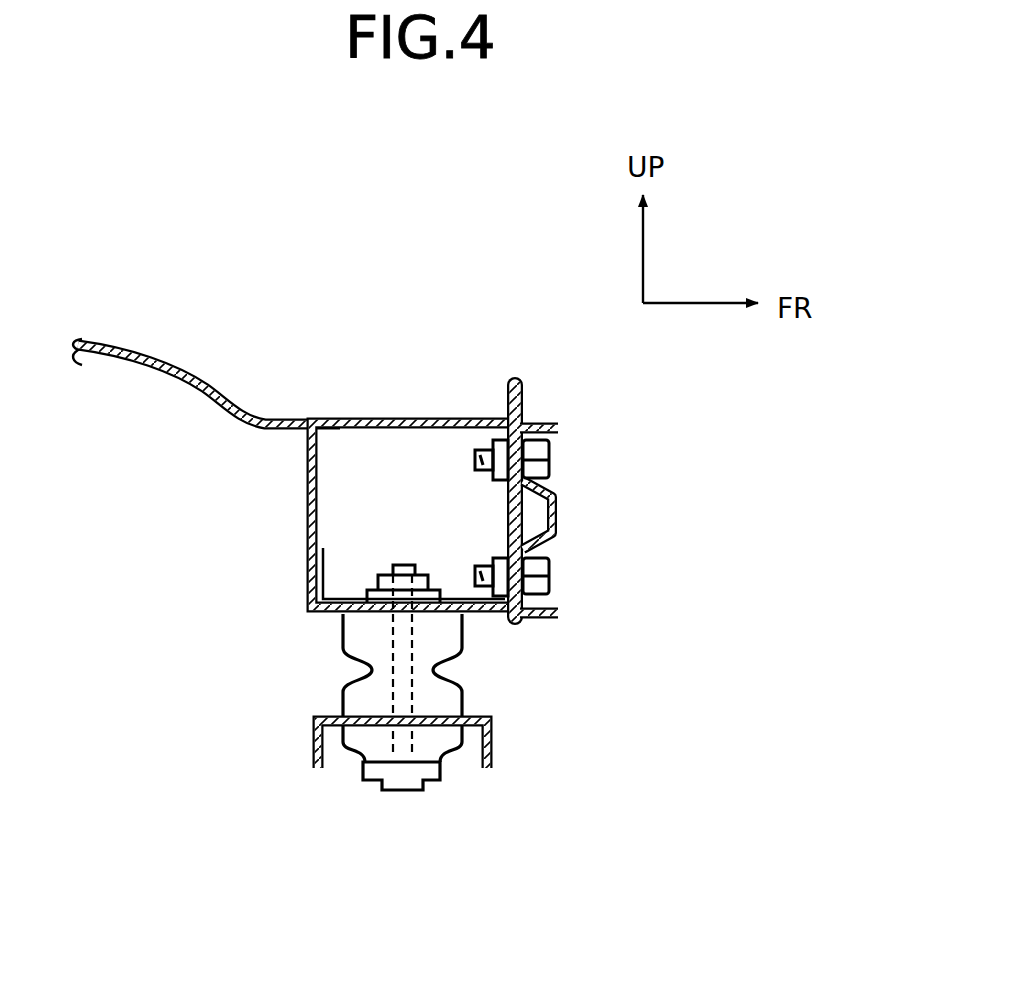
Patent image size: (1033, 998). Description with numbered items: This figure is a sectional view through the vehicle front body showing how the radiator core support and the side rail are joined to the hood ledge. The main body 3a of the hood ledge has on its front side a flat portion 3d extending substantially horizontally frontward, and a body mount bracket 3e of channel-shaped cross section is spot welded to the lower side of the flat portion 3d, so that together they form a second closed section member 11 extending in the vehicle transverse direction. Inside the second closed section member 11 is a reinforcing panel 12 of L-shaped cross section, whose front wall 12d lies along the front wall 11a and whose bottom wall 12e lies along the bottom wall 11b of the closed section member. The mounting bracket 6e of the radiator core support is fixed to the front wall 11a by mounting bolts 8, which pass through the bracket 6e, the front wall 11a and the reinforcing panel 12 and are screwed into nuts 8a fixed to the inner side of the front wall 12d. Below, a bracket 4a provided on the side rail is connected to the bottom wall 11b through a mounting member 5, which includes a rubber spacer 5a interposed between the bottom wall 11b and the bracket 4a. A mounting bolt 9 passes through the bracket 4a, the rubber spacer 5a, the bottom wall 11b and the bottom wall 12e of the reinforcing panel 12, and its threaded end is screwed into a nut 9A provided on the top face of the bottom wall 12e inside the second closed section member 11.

The main body of hood ledge 3a is at (152, 352).
The flat portion 3d is at (362, 418).
The body mount bracket 3e is at (294, 537).
The second closed section member 11 is at (358, 464).
The front wall 11a is at (530, 410).
The bottom wall 11b is at (487, 620).
The reinforcing panel 12 is at (484, 515).
The front wall of reinforcing panel 12d is at (459, 420).
The bottom wall of reinforcing panel 12e is at (467, 597).
The mounting bolts 8 is at (552, 462).
The nuts 8a is at (490, 420).
The mounting bracket 6e is at (555, 552).
The nut 9A is at (385, 565).
The mounting member 5 is at (351, 667).
The rubber spacer 5a is at (437, 698).
The bracket 4a is at (490, 745).
The mounting bolt 9 is at (400, 786).